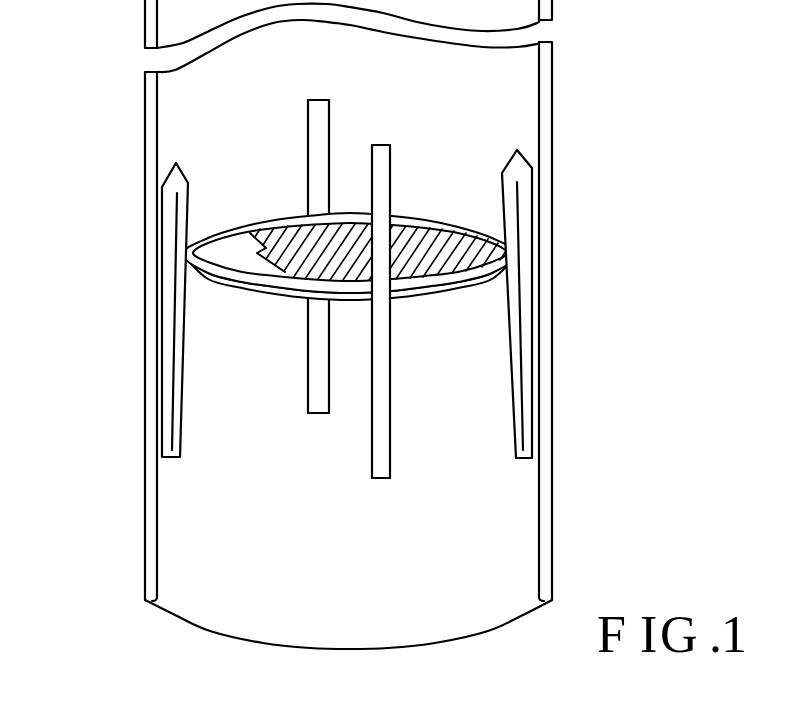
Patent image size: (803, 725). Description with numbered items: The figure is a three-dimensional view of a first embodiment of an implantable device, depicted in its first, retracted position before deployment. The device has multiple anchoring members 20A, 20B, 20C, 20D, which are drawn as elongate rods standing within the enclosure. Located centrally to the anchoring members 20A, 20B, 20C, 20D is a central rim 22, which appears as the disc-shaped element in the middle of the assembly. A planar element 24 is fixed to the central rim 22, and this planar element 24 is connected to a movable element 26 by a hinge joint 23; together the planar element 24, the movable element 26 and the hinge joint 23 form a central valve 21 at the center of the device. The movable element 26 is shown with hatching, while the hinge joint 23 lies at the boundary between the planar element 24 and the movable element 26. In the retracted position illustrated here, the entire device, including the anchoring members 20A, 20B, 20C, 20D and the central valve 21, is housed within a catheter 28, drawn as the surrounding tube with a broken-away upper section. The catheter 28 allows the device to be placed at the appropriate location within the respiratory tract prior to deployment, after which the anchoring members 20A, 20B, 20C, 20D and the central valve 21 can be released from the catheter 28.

The anchoring member 20A is at (170, 392).
The anchoring member 20B is at (314, 408).
The anchoring member 20C is at (386, 457).
The anchoring member 20D is at (525, 426).
The central valve 21 is at (275, 211).
The central rim 22 is at (457, 276).
The hinge joint 23 is at (256, 265).
The planar element 24 is at (232, 243).
The movable element 26 is at (433, 237).
The catheter 28 is at (150, 107).